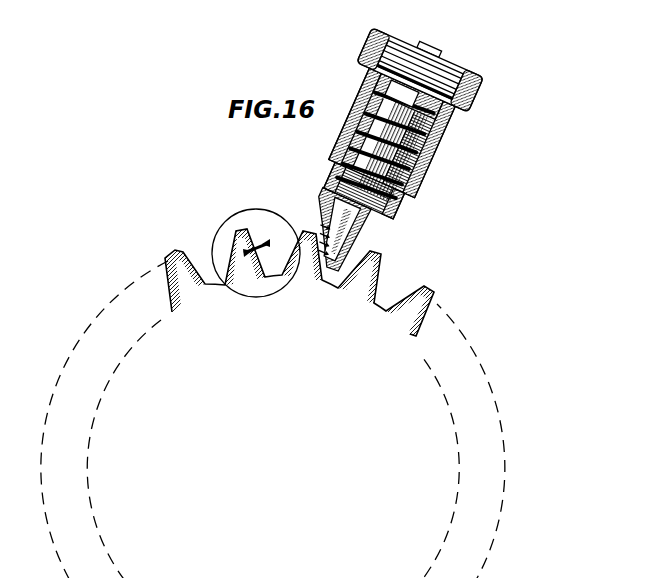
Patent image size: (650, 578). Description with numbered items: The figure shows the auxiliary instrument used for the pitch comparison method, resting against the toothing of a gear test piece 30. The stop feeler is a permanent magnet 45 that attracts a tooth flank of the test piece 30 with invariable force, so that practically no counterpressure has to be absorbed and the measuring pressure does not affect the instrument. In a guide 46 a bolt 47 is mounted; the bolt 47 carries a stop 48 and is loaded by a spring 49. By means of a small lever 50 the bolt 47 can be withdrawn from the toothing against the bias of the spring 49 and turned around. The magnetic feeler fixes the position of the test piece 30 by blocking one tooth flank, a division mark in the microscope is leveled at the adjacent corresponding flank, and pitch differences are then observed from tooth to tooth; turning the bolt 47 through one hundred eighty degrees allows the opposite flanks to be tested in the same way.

The test piece 30 is at (188, 290).
The permanent magnet 45 is at (365, 225).
The guide 46 is at (407, 183).
The bolt 47 is at (410, 143).
The stop 48 is at (380, 68).
The spring 49 is at (430, 117).
The small lever 50 is at (483, 92).